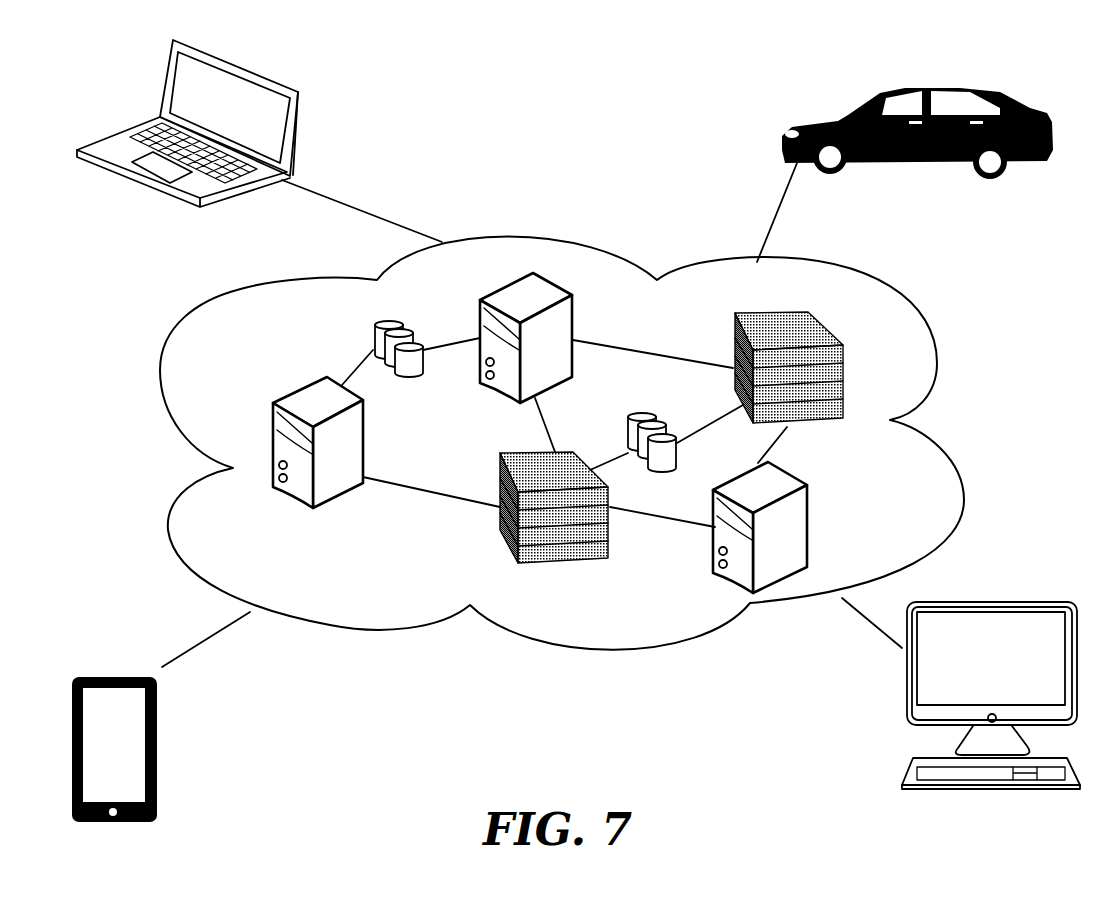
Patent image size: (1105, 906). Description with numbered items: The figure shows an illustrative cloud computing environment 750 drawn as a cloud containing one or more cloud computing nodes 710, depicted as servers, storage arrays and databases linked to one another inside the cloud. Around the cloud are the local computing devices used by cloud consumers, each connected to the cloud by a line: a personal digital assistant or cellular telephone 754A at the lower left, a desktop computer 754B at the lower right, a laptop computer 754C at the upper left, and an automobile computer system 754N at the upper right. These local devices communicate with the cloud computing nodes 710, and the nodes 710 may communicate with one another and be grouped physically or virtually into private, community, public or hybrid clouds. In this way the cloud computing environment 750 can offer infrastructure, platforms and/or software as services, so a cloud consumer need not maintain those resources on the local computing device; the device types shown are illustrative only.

The cloud computing nodes 710 is at (945, 463).
The cloud computing environment 750 is at (193, 320).
The personal digital assistant (PDA) or cellular telephone 754A is at (113, 685).
The desktop computer 754B is at (1033, 603).
The laptop computer 754C is at (283, 83).
The automobile computer system 754N is at (913, 87).